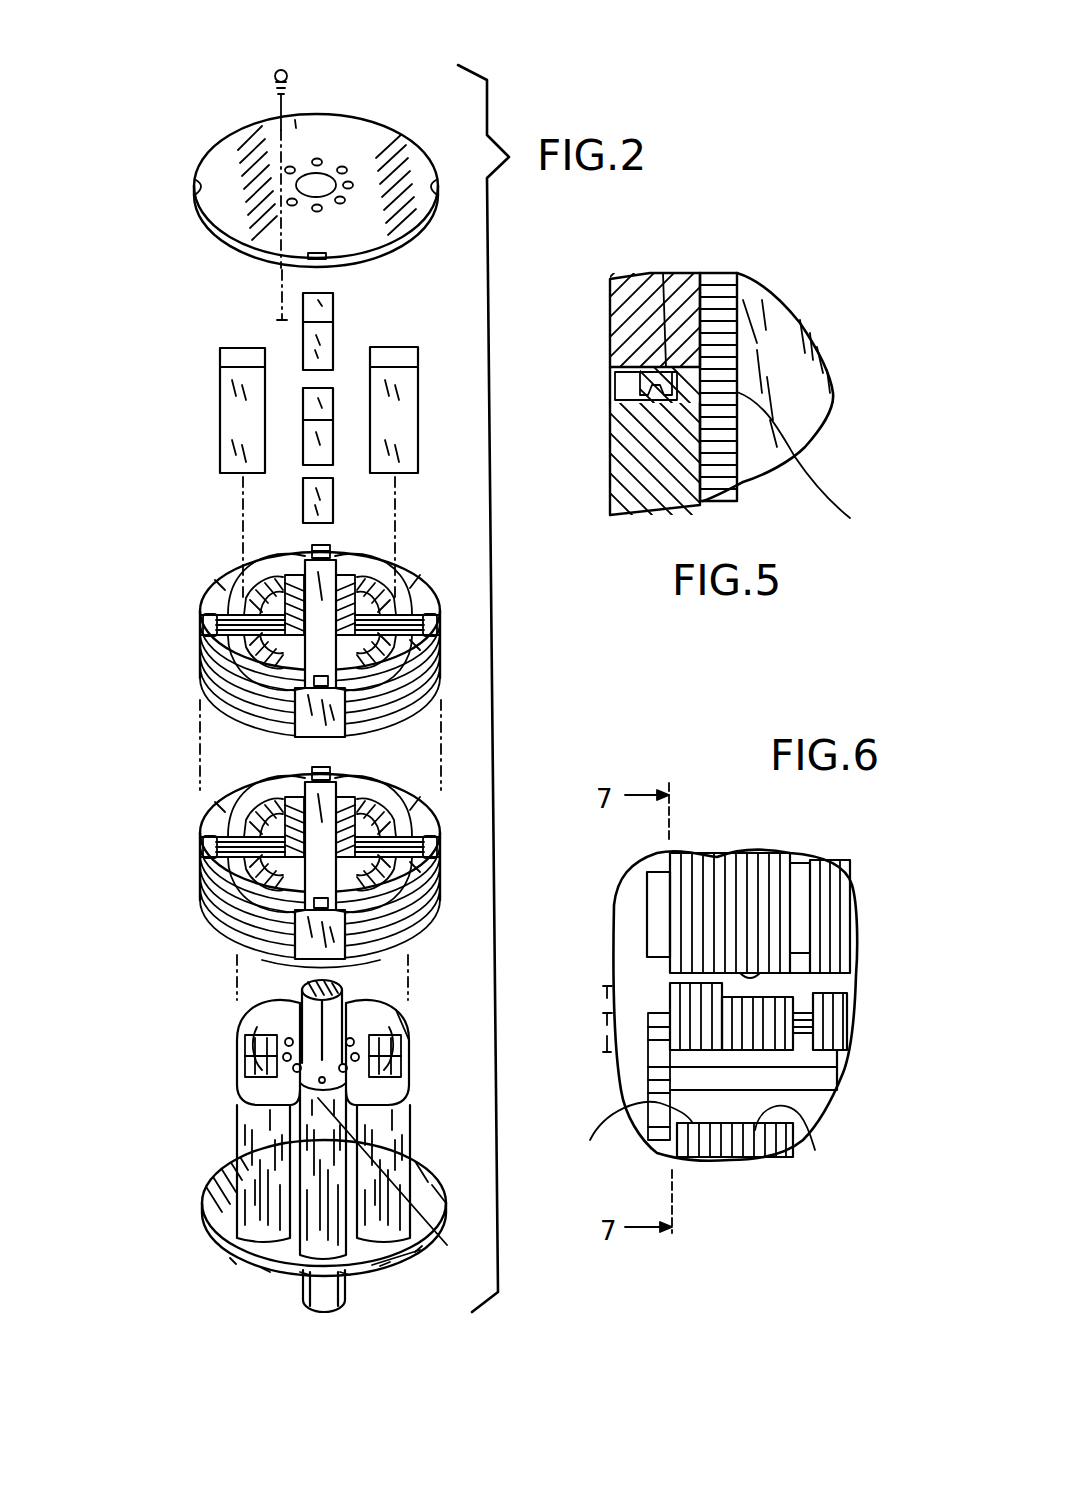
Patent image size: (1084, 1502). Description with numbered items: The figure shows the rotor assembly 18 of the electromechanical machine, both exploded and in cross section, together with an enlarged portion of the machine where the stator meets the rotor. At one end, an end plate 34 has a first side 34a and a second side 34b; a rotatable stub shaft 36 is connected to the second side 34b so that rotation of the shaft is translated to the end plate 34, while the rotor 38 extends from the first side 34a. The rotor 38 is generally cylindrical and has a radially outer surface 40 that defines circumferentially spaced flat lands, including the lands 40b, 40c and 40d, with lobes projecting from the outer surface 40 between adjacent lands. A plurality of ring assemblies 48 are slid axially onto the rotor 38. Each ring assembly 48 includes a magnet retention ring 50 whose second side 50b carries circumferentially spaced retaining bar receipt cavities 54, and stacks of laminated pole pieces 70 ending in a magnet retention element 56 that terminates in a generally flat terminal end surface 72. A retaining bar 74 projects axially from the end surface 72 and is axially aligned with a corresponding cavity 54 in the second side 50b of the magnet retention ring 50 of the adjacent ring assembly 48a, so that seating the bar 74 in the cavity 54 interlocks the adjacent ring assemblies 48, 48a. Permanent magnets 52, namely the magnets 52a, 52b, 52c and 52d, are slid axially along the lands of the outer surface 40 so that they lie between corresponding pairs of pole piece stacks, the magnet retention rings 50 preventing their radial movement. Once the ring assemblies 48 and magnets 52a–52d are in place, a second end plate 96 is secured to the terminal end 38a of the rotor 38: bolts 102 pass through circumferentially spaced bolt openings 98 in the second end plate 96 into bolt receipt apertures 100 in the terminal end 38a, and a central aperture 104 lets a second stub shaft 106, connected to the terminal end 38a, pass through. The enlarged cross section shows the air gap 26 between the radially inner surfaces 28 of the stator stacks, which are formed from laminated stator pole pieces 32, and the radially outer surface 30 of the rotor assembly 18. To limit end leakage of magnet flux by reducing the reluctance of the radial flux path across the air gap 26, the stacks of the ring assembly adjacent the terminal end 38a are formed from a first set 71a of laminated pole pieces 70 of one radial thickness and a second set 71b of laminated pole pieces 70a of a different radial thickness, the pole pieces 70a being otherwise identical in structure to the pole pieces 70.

In FIG. 2, the rotor assembly 18 is at (150, 1128).
In FIG. 6, the air gap 26 is at (832, 978).
In FIG. 6, the radially inner surfaces 28 is at (757, 962).
In FIG. 6, the radially outer surface 30 is at (797, 1020).
In FIG. 6, the stator pole pieces 32 is at (670, 923).
In FIG. 2, the end plate 34 is at (206, 1226).
In FIG. 2, the first side 34a is at (432, 1186).
In FIG. 2, the second side 34b is at (370, 1266).
In FIG. 2, the stub shaft 36 is at (304, 1300).
In FIG. 2, the rotor 38 is at (234, 1112).
In FIG. 2, the terminal end 38a is at (406, 1076).
In FIG. 2, the radially outer surface 40 is at (402, 1058).
In FIG. 2, the flat land 40b is at (412, 1038).
In FIG. 2, the flat land 40c is at (305, 1238).
In FIG. 2, the flat land 40d is at (240, 1026).
In FIG. 2, the ring assemblies 48 is at (197, 846).
In FIG. 5, the ring assemblies 48 is at (608, 458).
In FIG. 2, the adjacent ring assembly 48a is at (197, 631).
In FIG. 5, the adjacent ring assembly 48a is at (607, 314).
In FIG. 5, the magnet retention ring 50 is at (620, 382).
In FIG. 5, the second side 50b is at (617, 420).
In FIG. 5, the magnets 52 is at (608, 480).
In FIG. 2, the magnet 52a is at (335, 292).
In FIG. 2, the magnet 52b is at (418, 348).
In FIG. 2, the magnet 52c is at (300, 395).
In FIG. 2, the magnet 52d is at (220, 350).
In FIG. 5, the retaining bar receipt cavities 54 is at (614, 362).
In FIG. 5, the magnet retention element 56 is at (685, 290).
In FIG. 6, the laminated pole pieces 70 is at (745, 1158).
In FIG. 6, the laminated pole pieces 70a is at (688, 1160).
In FIG. 6, the first set 71a is at (815, 1150).
In FIG. 6, the second set 71b is at (612, 1135).
In FIG. 5, the terminal end surface 72 is at (794, 408).
In FIG. 5, the retaining bar 74 is at (665, 365).
In FIG. 2, the second end plate 96 is at (190, 212).
In FIG. 2, the bolt openings 98 is at (317, 158).
In FIG. 2, the bolt receipt apertures 100 is at (409, 1181).
In FIG. 2, the bolts 102 is at (278, 72).
In FIG. 2, the central aperture 104 is at (334, 172).
In FIG. 2, the stub shaft 106 is at (290, 978).